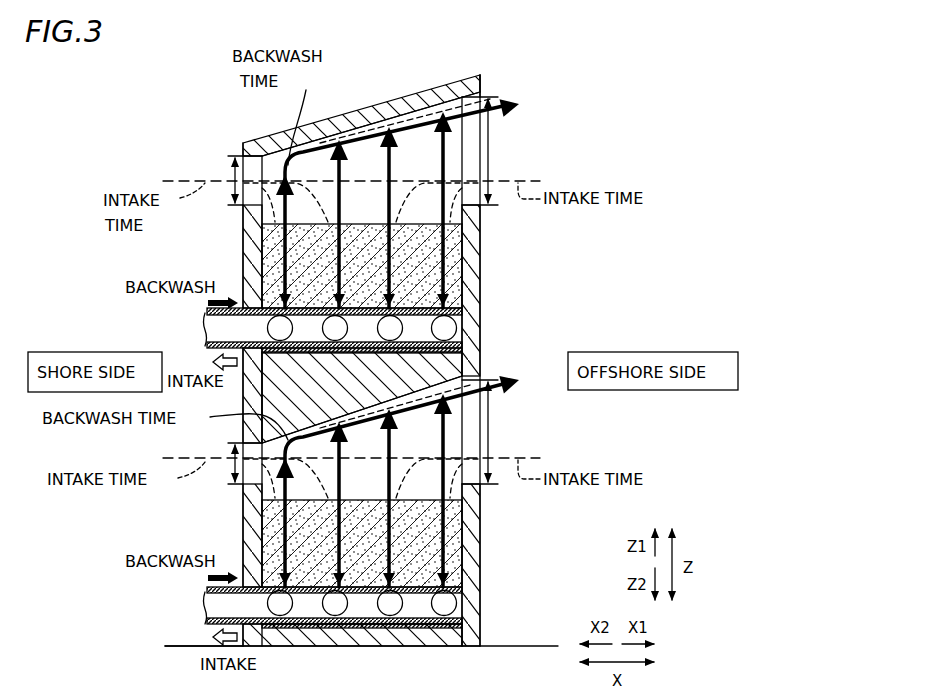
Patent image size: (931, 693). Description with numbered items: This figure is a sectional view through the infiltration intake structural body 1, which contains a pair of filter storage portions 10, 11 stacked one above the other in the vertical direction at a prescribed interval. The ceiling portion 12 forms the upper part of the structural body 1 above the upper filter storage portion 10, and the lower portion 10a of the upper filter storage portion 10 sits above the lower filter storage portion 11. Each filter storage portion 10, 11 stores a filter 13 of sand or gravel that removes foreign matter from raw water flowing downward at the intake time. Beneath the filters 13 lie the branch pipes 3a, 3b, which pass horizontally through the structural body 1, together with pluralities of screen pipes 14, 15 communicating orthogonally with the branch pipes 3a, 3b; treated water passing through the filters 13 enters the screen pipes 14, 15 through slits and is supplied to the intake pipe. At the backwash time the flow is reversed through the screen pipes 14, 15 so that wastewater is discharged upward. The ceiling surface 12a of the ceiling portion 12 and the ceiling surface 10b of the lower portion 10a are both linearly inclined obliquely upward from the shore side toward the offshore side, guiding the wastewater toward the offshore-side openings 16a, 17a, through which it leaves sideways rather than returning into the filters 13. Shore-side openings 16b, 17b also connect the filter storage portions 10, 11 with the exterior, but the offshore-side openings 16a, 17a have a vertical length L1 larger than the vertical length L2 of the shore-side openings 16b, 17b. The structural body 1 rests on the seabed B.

The infiltration intake structural body 1 is at (534, 99).
The branch pipe 3a is at (207, 310).
The branch pipe 3b is at (207, 588).
The filter storage portion 10 is at (474, 271).
The lower portion 10a is at (450, 368).
The ceiling surface 10b is at (456, 385).
The filter storage portion 11 is at (474, 548).
The ceiling portion 12 is at (362, 122).
The ceiling surface 12a is at (392, 123).
The filter 13 is at (364, 236).
The screen pipe 14 is at (258, 306).
The screen pipe 15 is at (258, 584).
The offshore-side opening 16a is at (480, 206).
The shore-side opening 16b is at (244, 207).
The offshore-side opening 17a is at (480, 485).
The shore-side opening 17b is at (244, 485).
The seabed B is at (186, 645).
The length of offshore-side opening L1 is at (499, 290).
The length of shore-side opening L2 is at (221, 320).